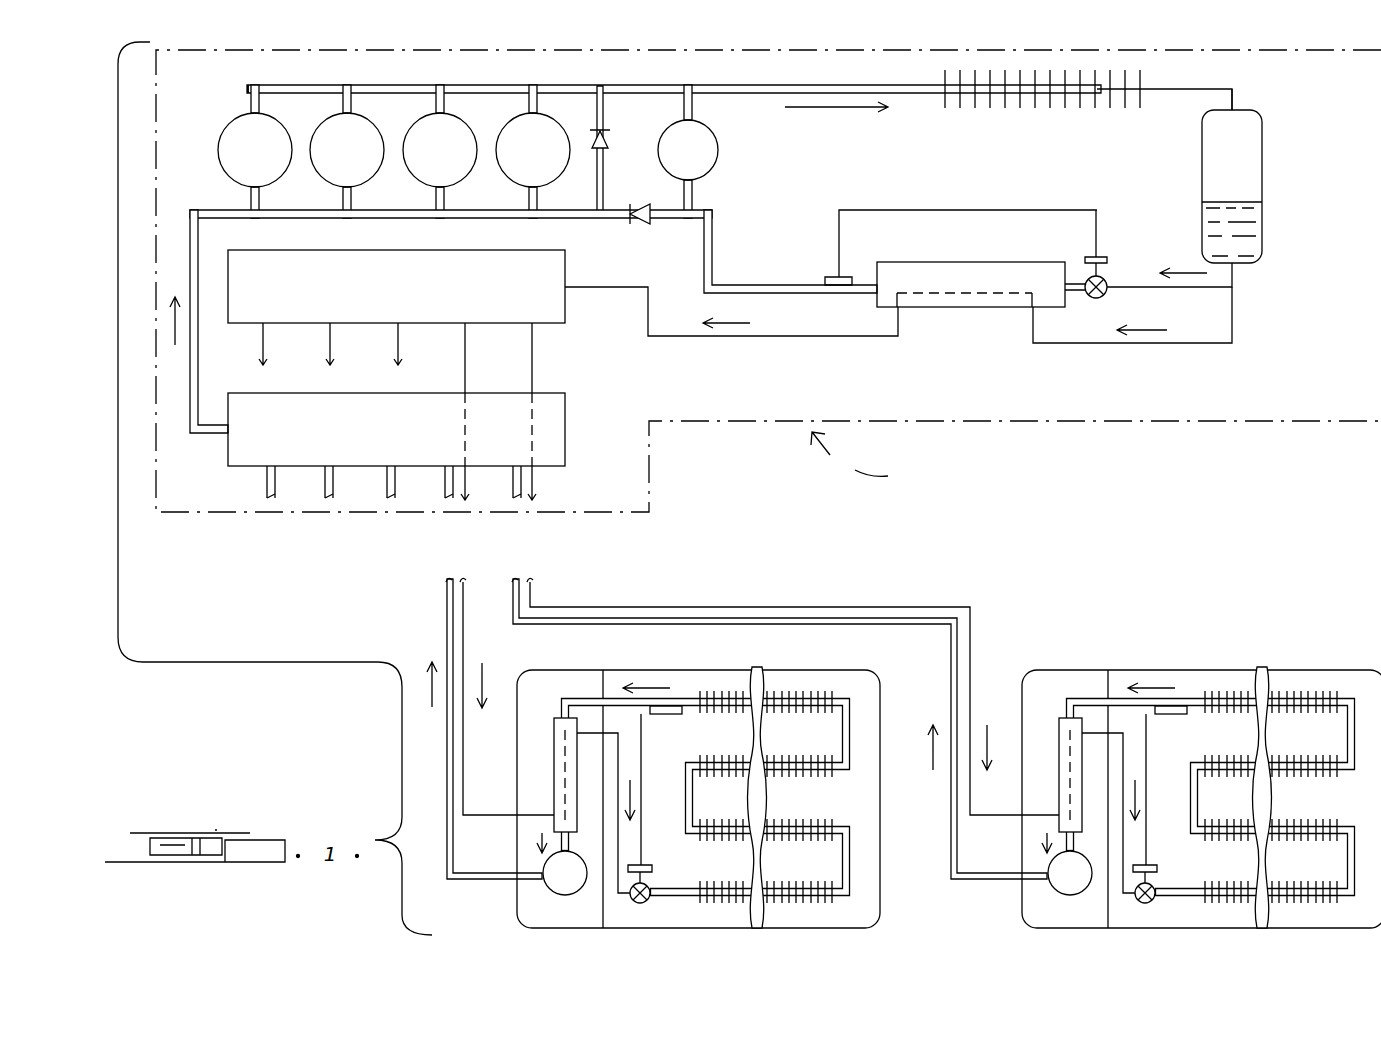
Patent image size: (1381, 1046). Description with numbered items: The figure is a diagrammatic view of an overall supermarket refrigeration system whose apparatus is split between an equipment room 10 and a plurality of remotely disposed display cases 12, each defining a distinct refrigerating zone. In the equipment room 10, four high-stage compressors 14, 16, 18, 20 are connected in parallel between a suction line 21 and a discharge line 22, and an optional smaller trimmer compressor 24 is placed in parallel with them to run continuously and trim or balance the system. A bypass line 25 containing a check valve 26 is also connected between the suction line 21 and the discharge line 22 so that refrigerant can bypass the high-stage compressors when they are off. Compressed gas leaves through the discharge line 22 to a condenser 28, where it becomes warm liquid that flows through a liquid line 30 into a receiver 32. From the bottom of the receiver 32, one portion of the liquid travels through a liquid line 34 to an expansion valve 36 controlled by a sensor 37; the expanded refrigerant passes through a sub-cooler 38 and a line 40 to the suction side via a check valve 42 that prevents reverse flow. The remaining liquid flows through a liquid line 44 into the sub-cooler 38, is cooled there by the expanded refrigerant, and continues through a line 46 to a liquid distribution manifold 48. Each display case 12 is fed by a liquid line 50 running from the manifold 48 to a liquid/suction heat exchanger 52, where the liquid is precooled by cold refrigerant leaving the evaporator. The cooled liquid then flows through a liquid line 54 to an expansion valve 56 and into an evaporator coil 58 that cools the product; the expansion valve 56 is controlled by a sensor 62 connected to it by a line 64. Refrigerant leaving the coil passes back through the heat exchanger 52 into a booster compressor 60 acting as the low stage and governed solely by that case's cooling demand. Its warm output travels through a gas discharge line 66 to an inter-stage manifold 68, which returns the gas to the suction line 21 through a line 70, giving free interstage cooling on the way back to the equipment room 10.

The equipment room 10 is at (1260, 422).
The display case 12 is at (865, 918).
The high-stage compressor 14 is at (243, 164).
The high-stage compressor 16 is at (335, 164).
The high-stage compressor 18 is at (428, 164).
The high-stage compressor 20 is at (521, 164).
The suction line 21 is at (457, 212).
The discharge line 22 is at (678, 62).
The trimmer compressor 24 is at (676, 164).
The bypass line 25 is at (603, 172).
The check valve 26 is at (610, 140).
The condenser 28 is at (1100, 93).
The liquid line 30 is at (1232, 102).
The receiver 32 is at (1262, 146).
The liquid line 34 is at (1150, 288).
The expansion valve 36 is at (1092, 298).
The sensor 37 is at (848, 277).
The sub-cooler 38 is at (940, 308).
The line 40 is at (773, 293).
The check valve 42 is at (640, 226).
The liquid line 44 is at (1135, 345).
The line 46 is at (800, 338).
The liquid distribution manifold 48 is at (540, 267).
The liquid line 50 is at (265, 350).
The liquid/suction heat exchanger 52 is at (553, 740).
The liquid line 54 is at (618, 830).
The expansion valve 56 is at (652, 886).
The evaporator coil 58 is at (803, 826).
The booster compressor 60 is at (560, 876).
The sensor 62 is at (652, 716).
The line 64 is at (641, 800).
The gas discharge line 66 is at (275, 498).
The inter-stage manifold 68 is at (552, 430).
The line 70 is at (196, 275).